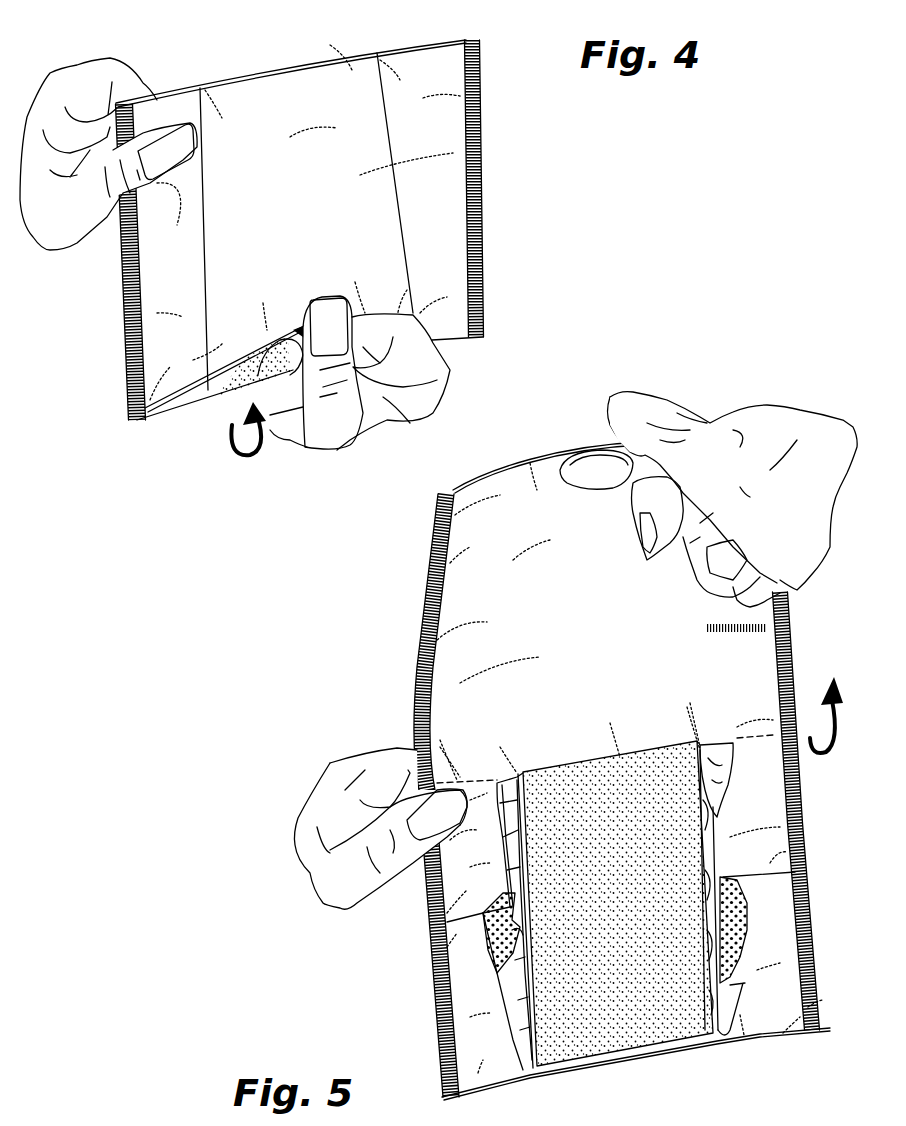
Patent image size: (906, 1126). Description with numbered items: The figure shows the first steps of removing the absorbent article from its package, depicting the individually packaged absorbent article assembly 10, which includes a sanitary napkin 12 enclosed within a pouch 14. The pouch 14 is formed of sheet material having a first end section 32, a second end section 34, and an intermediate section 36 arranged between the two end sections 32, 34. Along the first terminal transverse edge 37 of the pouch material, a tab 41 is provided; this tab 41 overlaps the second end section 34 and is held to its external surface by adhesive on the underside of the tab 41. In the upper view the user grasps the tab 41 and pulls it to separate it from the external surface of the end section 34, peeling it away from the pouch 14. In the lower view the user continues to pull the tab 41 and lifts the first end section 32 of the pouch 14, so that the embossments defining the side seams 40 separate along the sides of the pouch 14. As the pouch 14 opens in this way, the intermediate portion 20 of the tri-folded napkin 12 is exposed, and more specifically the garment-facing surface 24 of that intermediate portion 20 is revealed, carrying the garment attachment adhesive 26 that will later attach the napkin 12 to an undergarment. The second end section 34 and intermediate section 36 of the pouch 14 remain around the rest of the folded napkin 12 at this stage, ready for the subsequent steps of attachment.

In FIG. 4, the individually packaged absorbent article assembly 10 is at (502, 206).
In FIG. 5, the individually packaged absorbent article assembly 10 is at (356, 975).
In FIG. 4, the sanitary napkin 12 is at (258, 108).
In FIG. 5, the sanitary napkin 12 is at (702, 1056).
In FIG. 4, the pouch 14 is at (148, 297).
In FIG. 5, the pouch 14 is at (412, 612).
In FIG. 5, the intermediate portion 20 is at (580, 972).
In FIG. 5, the garment-facing surface 24 is at (640, 1028).
In FIG. 5, the garment attachment adhesive 26 is at (582, 800).
In FIG. 5, the first end section 32 is at (618, 624).
In FIG. 5, the second end section 34 is at (779, 952).
In FIG. 5, the intermediate section 36 is at (764, 810).
In FIG. 4, the first terminal transverse edge 37 is at (257, 350).
In FIG. 5, the first terminal transverse edge 37 is at (507, 464).
In FIG. 5, the side seams 40 is at (807, 836).
In FIG. 4, the tab 41 is at (297, 333).
In FIG. 5, the tab 41 is at (607, 448).